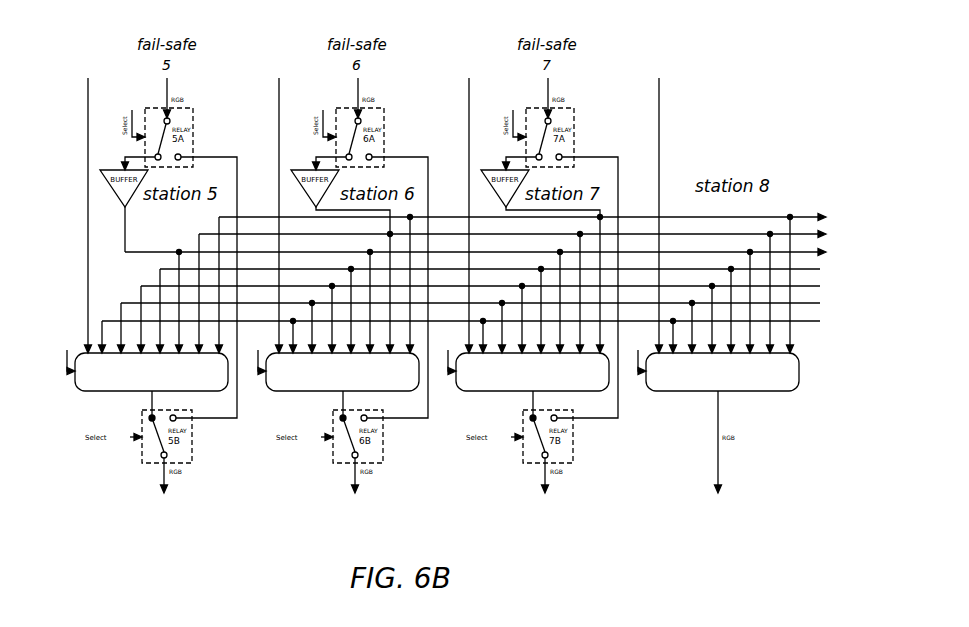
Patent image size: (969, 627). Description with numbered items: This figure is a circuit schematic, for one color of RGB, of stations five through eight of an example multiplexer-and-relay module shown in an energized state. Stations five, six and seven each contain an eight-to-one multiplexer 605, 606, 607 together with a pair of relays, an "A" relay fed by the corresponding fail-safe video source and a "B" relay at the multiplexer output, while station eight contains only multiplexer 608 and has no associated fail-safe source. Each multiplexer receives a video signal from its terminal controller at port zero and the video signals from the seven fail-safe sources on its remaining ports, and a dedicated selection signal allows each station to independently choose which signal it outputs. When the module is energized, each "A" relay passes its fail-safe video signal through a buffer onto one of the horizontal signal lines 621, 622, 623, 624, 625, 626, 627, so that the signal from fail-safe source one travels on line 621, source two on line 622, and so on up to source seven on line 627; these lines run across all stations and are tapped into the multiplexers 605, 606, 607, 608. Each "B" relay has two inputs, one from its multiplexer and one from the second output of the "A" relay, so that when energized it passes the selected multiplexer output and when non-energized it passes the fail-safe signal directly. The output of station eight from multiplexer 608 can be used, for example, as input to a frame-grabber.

The multiplexer 605 is at (108, 393).
The multiplexer 606 is at (312, 393).
The multiplexer 607 is at (510, 391).
The multiplexer 608 is at (700, 391).
The signal line 621 is at (820, 319).
The signal line 622 is at (818, 300).
The signal line 623 is at (820, 283).
The signal line 624 is at (815, 267).
The signal line 625 is at (812, 249).
The signal line 626 is at (812, 232).
The signal line 627 is at (810, 214).